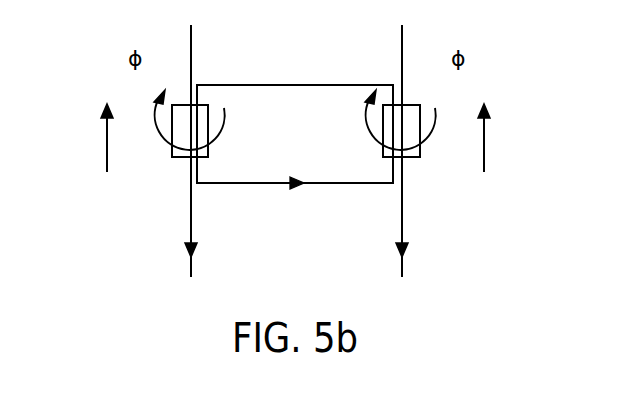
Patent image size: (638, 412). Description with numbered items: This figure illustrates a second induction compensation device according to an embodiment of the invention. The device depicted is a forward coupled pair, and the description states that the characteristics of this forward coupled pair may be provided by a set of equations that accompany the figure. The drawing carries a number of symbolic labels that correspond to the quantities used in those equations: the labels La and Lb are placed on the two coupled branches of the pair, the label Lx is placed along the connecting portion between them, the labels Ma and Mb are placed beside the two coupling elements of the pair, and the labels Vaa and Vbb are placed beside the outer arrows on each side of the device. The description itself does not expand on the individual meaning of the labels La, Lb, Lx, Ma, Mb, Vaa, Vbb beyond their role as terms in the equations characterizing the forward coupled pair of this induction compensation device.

The inductance of coil a La is at (197, 151).
The inductance of coil b Lb is at (409, 151).
The mutual/core inductance Lx is at (295, 152).
The torque on coil a Ma is at (204, 127).
The torque on coil b Mb is at (416, 127).
The voltage across coil a Vaa is at (87, 143).
The voltage across coil b Vbb is at (506, 143).